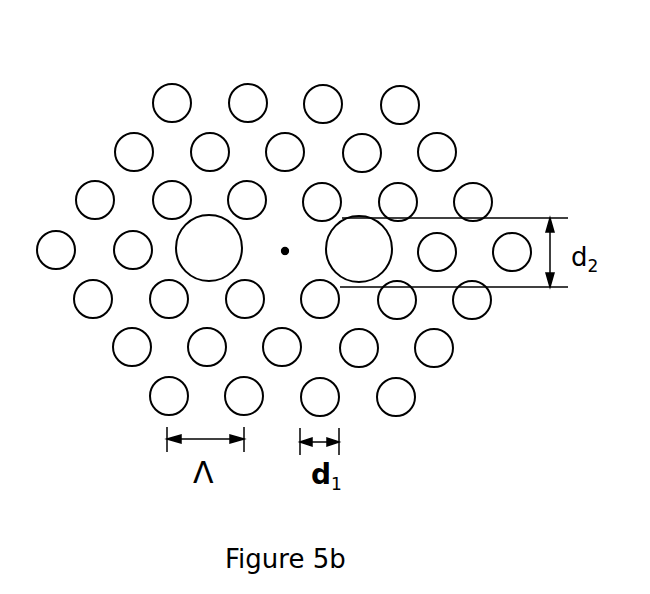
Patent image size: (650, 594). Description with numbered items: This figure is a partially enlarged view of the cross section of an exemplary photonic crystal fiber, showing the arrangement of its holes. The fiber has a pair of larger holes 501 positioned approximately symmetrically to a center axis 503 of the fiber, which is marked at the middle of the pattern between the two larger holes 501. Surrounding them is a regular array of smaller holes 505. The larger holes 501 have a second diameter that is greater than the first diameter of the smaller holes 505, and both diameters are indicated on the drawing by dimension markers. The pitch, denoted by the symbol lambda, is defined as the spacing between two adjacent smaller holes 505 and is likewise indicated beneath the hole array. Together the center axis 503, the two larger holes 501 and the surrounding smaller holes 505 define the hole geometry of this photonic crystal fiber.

The larger holes 501 is at (178, 260).
The center axis 503 is at (285, 248).
The smaller holes 505 is at (454, 144).